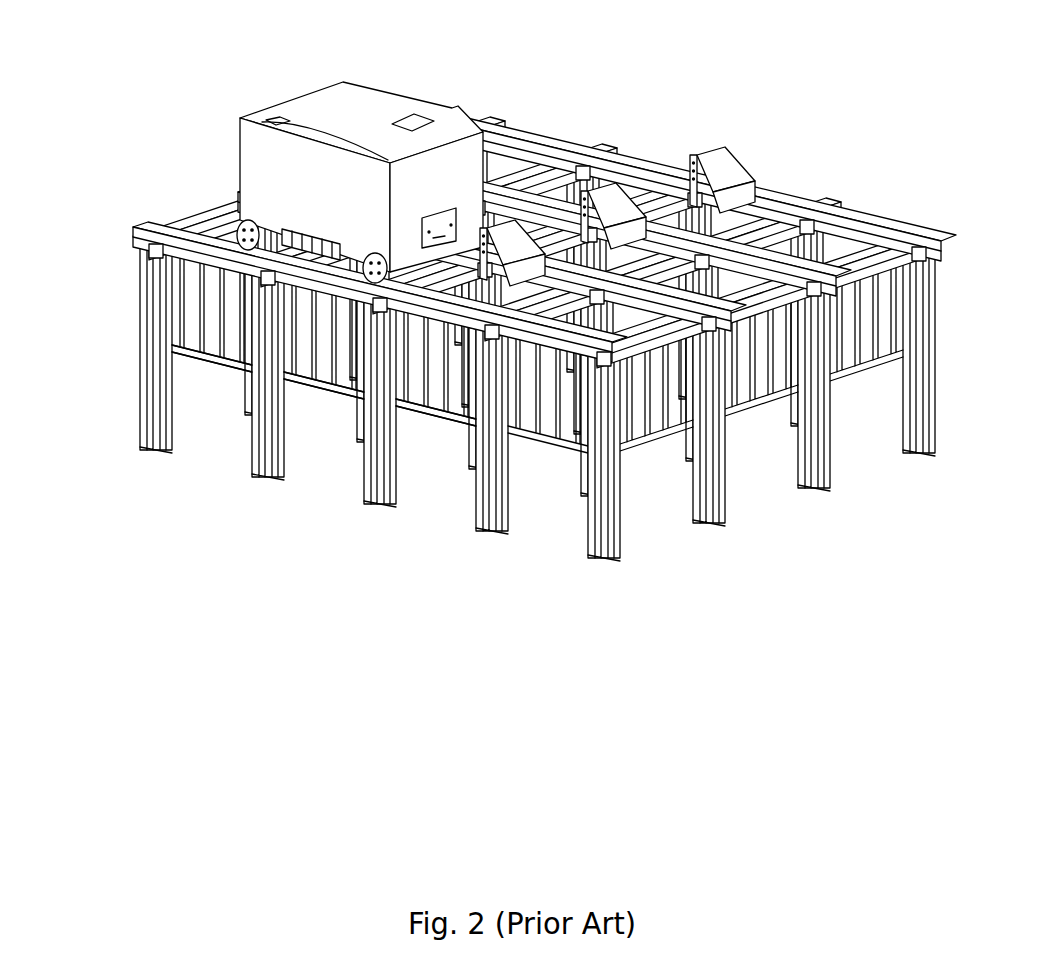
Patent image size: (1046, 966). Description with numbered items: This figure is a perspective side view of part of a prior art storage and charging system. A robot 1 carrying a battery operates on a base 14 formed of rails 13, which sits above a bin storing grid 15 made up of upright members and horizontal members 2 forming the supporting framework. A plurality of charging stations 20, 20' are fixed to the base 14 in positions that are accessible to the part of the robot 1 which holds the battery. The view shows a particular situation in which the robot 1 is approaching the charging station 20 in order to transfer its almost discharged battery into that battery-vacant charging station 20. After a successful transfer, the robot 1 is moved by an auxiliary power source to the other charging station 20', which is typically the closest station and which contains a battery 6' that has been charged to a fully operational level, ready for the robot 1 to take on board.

The robot 1 is at (323, 97).
The horizontal members / rails of the frame 2 is at (285, 245).
The battery 6' is at (705, 151).
The rails 13 is at (868, 215).
The base 14 is at (123, 208).
The bin storing grid 15 is at (828, 511).
The charging station 20 is at (600, 153).
The charging station 20' is at (707, 134).